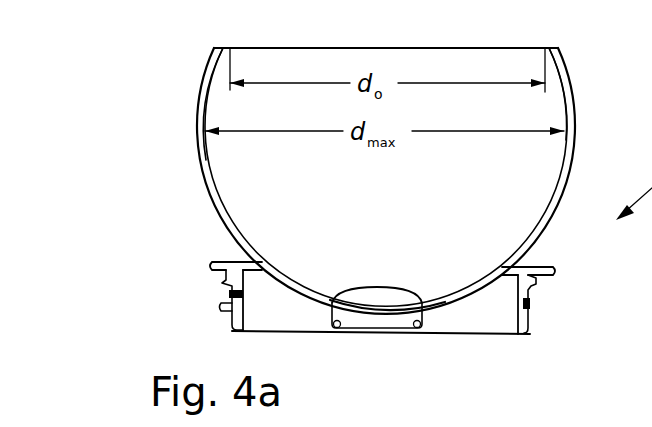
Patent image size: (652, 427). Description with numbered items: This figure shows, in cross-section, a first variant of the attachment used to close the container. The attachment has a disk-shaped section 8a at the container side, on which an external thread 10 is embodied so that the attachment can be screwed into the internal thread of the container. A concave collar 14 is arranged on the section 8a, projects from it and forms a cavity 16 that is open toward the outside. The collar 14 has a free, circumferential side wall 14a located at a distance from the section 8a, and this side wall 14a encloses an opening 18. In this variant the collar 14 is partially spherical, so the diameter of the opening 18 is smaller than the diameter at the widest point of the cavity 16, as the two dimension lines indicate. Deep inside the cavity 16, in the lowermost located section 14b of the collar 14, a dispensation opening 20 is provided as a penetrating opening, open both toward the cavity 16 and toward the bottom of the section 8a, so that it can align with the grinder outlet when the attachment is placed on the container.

The concave collar 14 is at (326, 210).
The circumferential side wall 14a is at (524, 50).
The lowermost located section of the collar 14b is at (445, 285).
The cavity 16 is at (222, 112).
The opening 18 is at (255, 58).
The disk-shaped section at the container side 8a is at (546, 289).
The external thread 10 is at (536, 306).
The dispensation opening 20 is at (375, 302).